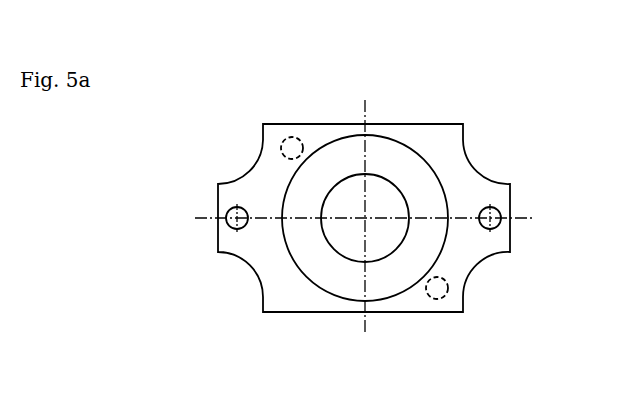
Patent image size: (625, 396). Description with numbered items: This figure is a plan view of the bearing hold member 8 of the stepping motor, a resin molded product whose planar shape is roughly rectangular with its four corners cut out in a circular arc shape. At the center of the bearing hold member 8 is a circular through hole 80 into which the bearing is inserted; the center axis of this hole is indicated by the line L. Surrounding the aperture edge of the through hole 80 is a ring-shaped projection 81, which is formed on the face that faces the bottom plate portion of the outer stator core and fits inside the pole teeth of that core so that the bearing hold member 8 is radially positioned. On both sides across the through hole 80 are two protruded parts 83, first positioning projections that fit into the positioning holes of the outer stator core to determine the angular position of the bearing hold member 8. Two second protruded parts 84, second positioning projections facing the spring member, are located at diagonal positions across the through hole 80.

The bearing hold member 8 is at (476, 97).
The through hole 80 is at (407, 242).
The ring-shaped projection 81 is at (380, 165).
The protruded parts 83 is at (227, 228).
The second protruded parts 84 is at (292, 137).
The center axis L is at (366, 217).